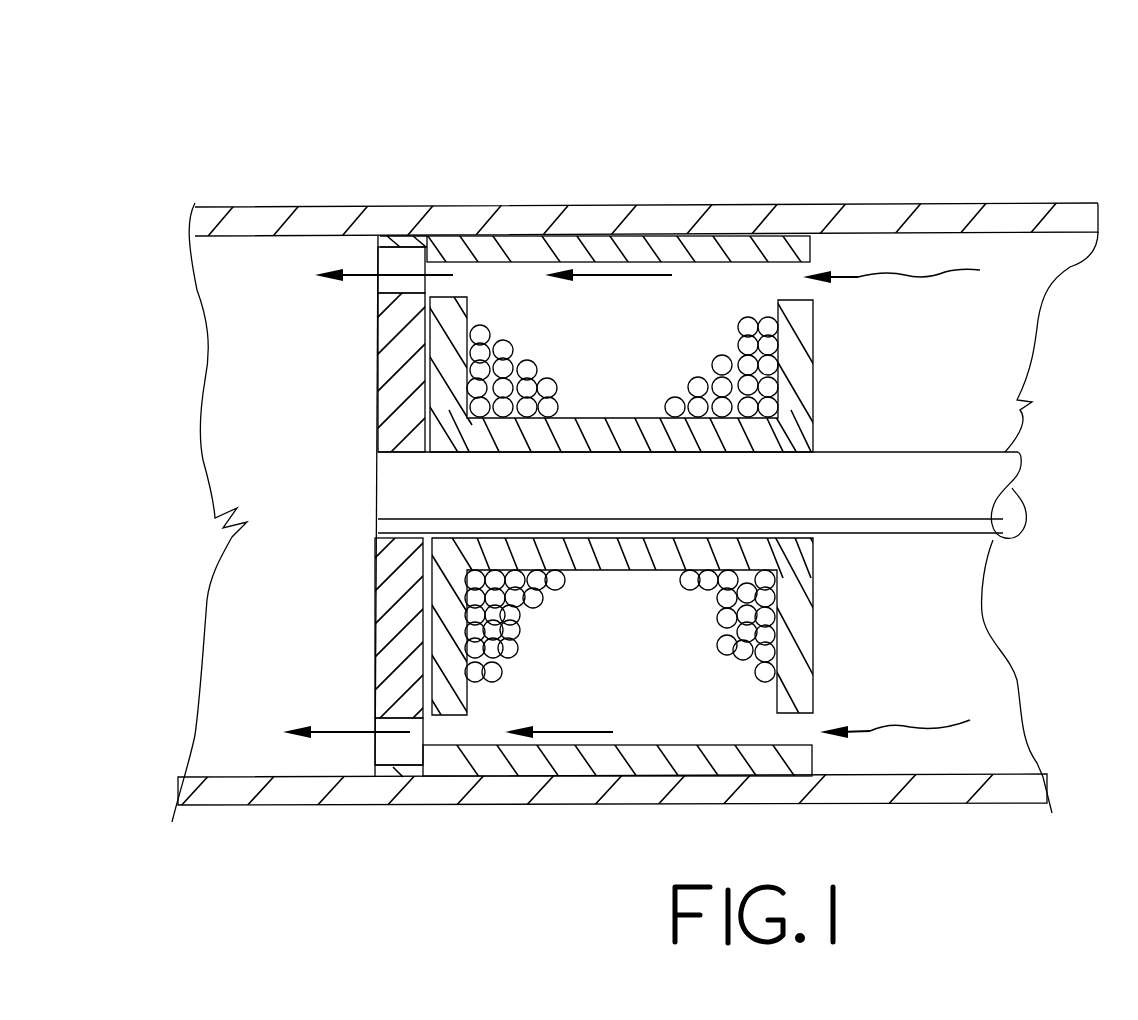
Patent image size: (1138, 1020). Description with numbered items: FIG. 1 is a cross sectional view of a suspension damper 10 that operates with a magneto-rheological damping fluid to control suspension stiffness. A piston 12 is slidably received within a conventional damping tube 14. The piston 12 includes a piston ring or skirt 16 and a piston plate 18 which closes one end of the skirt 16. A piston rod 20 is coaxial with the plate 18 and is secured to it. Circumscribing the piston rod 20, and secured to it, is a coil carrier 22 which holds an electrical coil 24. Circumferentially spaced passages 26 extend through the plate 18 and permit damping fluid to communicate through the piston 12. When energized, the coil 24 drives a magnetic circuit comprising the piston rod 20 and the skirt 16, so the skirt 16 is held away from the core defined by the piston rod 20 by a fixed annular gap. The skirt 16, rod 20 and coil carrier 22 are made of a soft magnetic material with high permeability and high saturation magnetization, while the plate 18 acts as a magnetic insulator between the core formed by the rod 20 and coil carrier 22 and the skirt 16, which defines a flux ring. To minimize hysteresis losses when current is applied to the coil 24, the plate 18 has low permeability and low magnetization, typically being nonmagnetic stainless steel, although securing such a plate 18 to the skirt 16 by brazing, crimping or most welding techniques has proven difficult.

The suspension damper 10 is at (1022, 160).
The piston 12 is at (822, 290).
The damping tube 14 is at (875, 207).
The piston ring or skirt 16 is at (673, 236).
The piston plate 18 is at (398, 588).
The piston rod 20 is at (988, 485).
The coil carrier 22 is at (813, 428).
The electrical coil 24 is at (743, 362).
The passages 26 is at (395, 282).